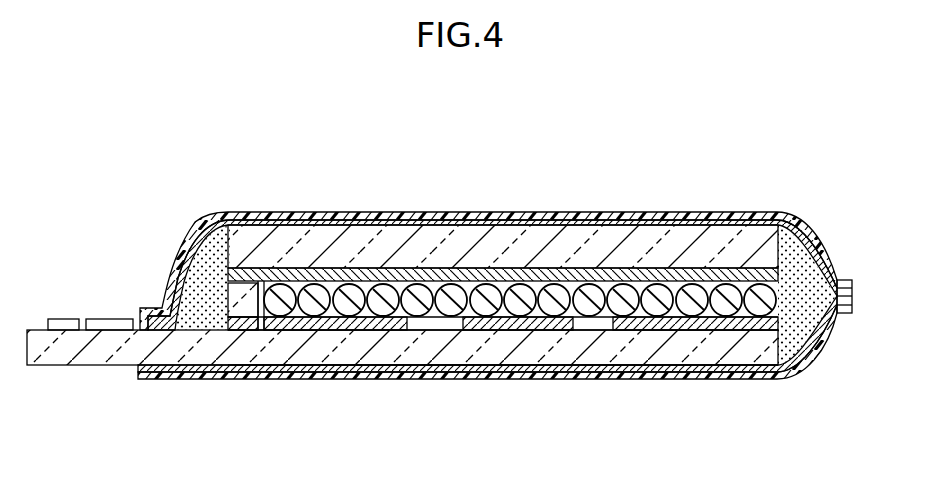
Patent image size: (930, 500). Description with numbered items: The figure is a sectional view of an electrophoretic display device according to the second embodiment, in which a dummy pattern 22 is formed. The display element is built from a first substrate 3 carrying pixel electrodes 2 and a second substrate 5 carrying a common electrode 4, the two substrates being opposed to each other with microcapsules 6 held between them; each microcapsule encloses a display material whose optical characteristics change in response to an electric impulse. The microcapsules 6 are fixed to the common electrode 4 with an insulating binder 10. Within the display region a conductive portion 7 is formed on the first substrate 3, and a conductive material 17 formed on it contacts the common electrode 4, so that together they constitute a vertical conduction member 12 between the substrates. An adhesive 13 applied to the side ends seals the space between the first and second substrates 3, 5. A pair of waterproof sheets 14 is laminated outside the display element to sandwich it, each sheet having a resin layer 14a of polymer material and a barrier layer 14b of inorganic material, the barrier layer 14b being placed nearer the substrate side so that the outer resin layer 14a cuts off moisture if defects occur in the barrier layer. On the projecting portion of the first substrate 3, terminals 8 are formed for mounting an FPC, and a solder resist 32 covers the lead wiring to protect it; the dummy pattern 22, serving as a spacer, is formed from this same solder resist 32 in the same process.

The pixel electrodes 2 is at (498, 319).
The first substrate 3 is at (767, 350).
The common electrode 4 is at (688, 271).
The second substrate 5 is at (744, 240).
The microcapsules 6 is at (522, 308).
The conductive portion 7 is at (253, 328).
The terminals 8 is at (68, 319).
The binder 10 is at (607, 310).
The vertical conduction member 12 is at (213, 432).
The adhesive 13 is at (204, 268).
The waterproof sheets 14 is at (495, 294).
The resin layer 14a is at (279, 154).
The barrier layer 14b is at (301, 213).
The conductive material 17 is at (246, 328).
The dummy pattern 22 is at (300, 323).
The solder resist 32 is at (113, 319).